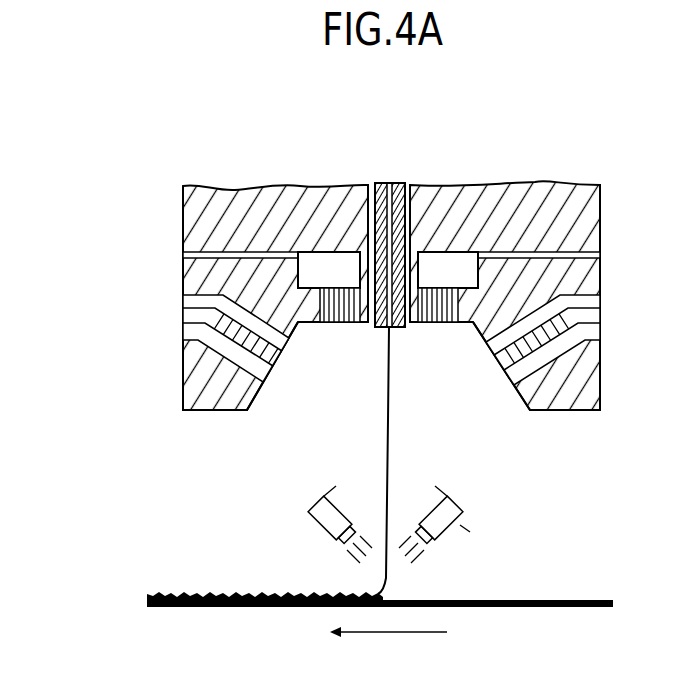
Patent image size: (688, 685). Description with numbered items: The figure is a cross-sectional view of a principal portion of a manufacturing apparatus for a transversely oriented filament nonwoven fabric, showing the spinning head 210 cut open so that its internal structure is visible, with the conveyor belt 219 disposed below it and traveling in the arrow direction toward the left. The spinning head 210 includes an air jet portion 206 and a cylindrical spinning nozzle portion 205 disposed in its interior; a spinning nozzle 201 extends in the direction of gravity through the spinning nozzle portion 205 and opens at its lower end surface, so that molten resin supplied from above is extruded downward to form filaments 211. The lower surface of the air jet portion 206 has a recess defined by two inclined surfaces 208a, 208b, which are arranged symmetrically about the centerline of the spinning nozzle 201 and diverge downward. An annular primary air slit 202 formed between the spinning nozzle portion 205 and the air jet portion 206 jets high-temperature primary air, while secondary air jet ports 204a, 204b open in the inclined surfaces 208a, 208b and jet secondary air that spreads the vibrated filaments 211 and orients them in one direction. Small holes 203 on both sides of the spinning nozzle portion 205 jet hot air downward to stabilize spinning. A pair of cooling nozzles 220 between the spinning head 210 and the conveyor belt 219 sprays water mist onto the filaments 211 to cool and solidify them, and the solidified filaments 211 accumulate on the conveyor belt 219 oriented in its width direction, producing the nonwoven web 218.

The spinning nozzle 201 is at (390, 185).
The primary air slit 202 is at (368, 328).
The small holes 203 is at (341, 323).
The secondary air jet ports 204a is at (500, 367).
The secondary air jet ports 204b is at (285, 348).
The spinning nozzle portion 205 is at (402, 185).
The air jet portion 206 is at (522, 185).
The inclined surface 208a is at (532, 413).
The inclined surface 208b is at (258, 418).
The spinning head 210 is at (279, 168).
The filaments 211 is at (389, 447).
The nonwoven web 218 is at (187, 592).
The conveyor belt 219 is at (507, 608).
The cooling nozzles 220 is at (310, 530).